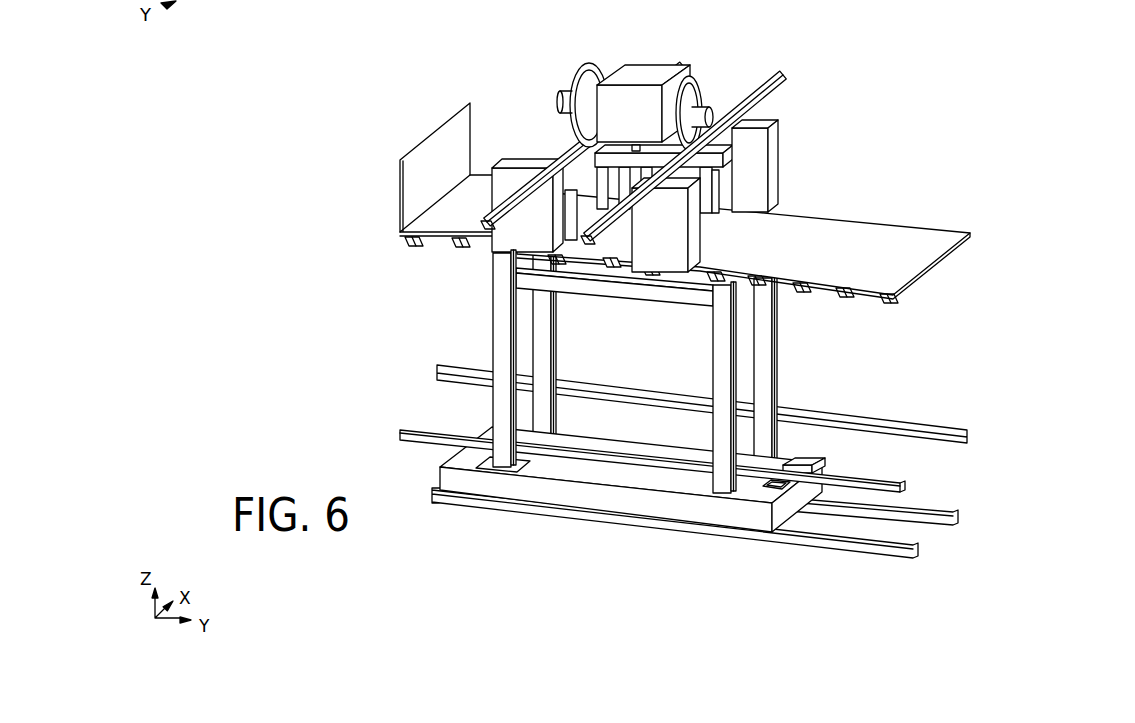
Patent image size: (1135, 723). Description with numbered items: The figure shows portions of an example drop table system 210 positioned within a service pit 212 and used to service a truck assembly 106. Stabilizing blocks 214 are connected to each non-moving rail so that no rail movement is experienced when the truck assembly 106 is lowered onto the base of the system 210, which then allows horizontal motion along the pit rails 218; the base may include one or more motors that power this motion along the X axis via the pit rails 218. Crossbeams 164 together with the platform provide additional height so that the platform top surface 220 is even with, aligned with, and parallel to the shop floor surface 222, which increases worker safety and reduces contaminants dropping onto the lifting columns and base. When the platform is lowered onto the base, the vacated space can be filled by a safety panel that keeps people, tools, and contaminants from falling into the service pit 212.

The drop table system 210 is at (944, 26).
The truck assembly 106 is at (708, 69).
The stabilizing block 214 is at (509, 148).
The shop floor surface 222 is at (490, 217).
The platform top surface 220 is at (588, 261).
The crossbeam 164 is at (636, 297).
The service pit 212 is at (421, 359).
The pit rail 218 is at (799, 560).